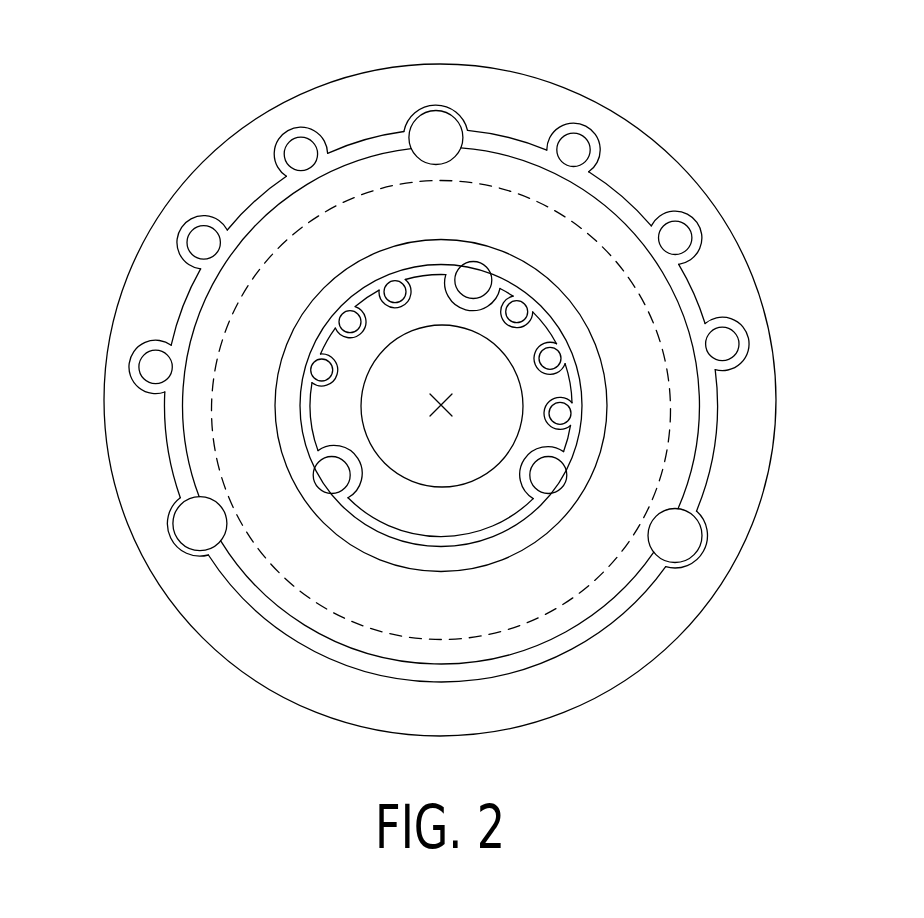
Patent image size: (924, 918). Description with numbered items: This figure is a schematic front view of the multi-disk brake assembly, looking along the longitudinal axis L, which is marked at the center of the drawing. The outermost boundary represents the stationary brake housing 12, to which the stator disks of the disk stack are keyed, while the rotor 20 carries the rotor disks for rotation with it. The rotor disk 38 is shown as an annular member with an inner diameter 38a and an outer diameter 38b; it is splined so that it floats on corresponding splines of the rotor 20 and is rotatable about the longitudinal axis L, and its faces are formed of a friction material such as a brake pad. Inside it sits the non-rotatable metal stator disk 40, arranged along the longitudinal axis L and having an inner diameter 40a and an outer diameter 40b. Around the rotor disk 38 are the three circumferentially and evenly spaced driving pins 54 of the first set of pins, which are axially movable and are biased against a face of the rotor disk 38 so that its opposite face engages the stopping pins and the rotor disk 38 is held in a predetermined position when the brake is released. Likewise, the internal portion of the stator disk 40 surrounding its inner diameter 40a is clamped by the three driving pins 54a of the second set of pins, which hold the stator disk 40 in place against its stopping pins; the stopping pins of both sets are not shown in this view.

The brake housing 12 is at (325, 413).
The rotor 20 is at (140, 287).
The rotor disk 38 is at (657, 450).
The inner diameter 38a is at (507, 560).
The outer diameter 38b is at (692, 478).
The stator disk 40 is at (593, 418).
The inner diameter 40a is at (575, 407).
The outer diameter 40b is at (650, 302).
The driving pin 54 is at (425, 123).
The driving pin 54a is at (474, 280).
The longitudinal axis L is at (433, 405).